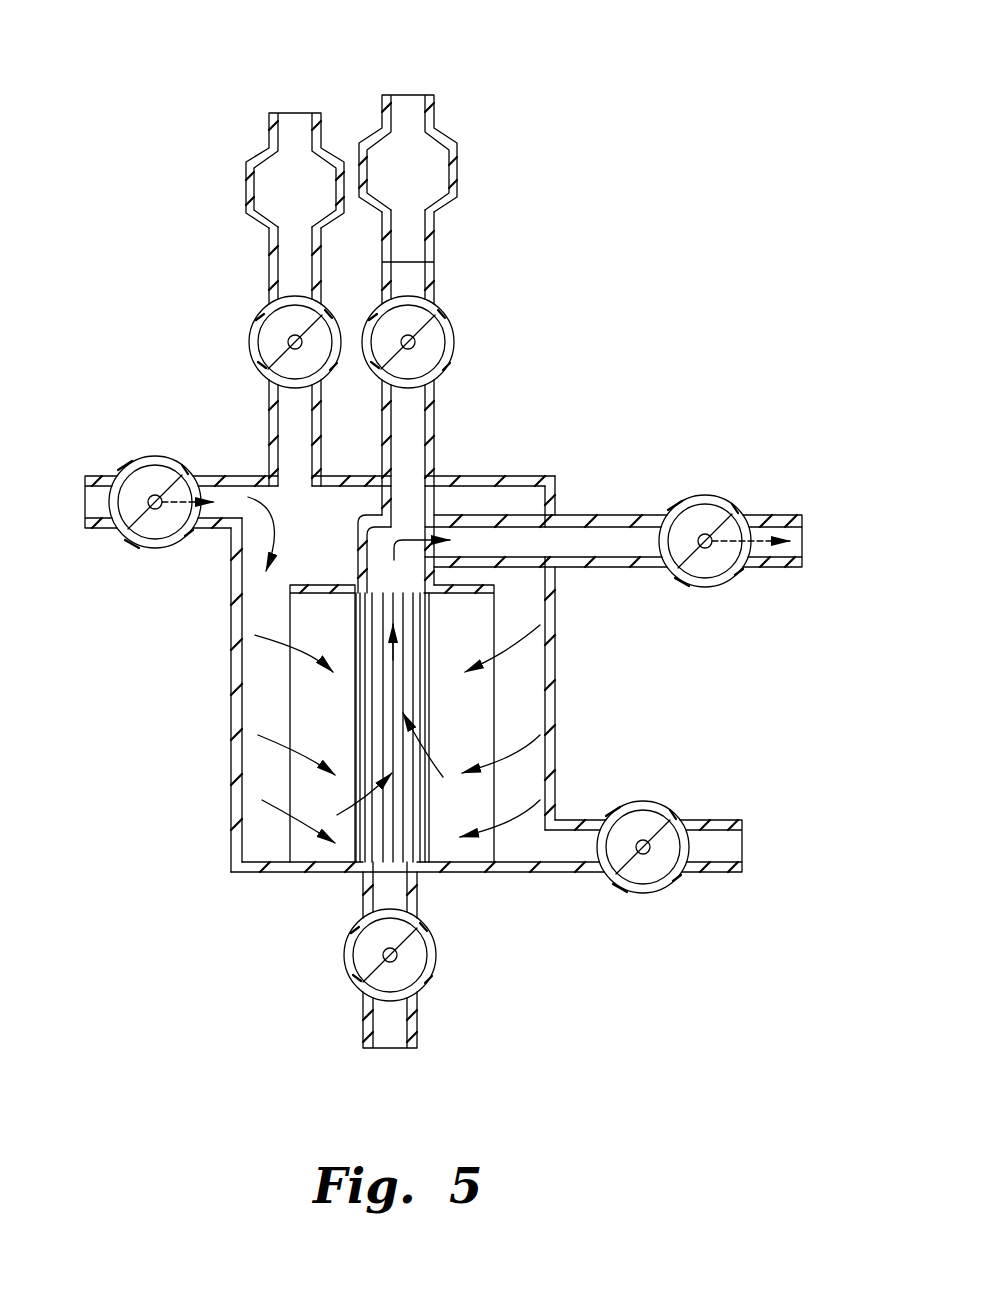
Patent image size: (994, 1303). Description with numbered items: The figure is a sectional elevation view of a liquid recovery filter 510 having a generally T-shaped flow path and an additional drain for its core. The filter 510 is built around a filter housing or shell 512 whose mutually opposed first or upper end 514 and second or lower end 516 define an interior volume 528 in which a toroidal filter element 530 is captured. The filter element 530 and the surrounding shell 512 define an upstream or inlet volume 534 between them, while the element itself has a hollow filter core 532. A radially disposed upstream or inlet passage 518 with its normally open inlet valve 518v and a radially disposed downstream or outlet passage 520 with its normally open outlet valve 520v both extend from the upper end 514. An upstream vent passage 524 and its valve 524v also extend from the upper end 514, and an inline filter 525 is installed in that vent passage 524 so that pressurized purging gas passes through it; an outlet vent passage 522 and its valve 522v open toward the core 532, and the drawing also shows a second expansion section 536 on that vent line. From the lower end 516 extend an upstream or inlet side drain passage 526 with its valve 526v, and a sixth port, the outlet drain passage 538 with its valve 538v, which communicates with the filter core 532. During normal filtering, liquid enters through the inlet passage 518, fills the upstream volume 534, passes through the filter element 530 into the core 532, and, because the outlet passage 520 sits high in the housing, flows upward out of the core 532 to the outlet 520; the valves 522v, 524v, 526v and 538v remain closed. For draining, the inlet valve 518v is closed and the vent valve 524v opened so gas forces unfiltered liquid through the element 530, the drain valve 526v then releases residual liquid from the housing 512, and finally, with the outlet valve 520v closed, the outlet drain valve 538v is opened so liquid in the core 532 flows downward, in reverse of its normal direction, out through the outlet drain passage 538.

The liquid recovery filter 510 is at (196, 930).
The filter housing or shell 512 is at (397, 674).
The first or upper end of the housing 514 is at (513, 476).
The second or lower end of the housing 516 is at (295, 873).
The upstream or inlet passage 518 is at (213, 478).
The inlet valve 518v is at (128, 463).
The downstream or outlet passage 520 is at (617, 515).
The outlet valve 520v is at (728, 500).
The outlet vent passage 522 is at (434, 412).
The outlet vent passage valve 522v is at (453, 312).
The upstream vent passage 524 is at (263, 413).
The upstream vent passage valve 524v is at (248, 338).
The inline filter 525 is at (248, 183).
The upstream or inlet side drain passage 526 is at (575, 820).
The upstream drain passage valve 526v is at (672, 805).
The interior volume 528 is at (260, 680).
The toroidal filter element 530 is at (290, 777).
The filter core 532 is at (430, 652).
The upstream or inlet volume 534 is at (553, 692).
The expansion chamber of second inlet 536 is at (358, 167).
The outlet drain passage 538 is at (418, 892).
The outlet drain passage valve 538v is at (433, 977).